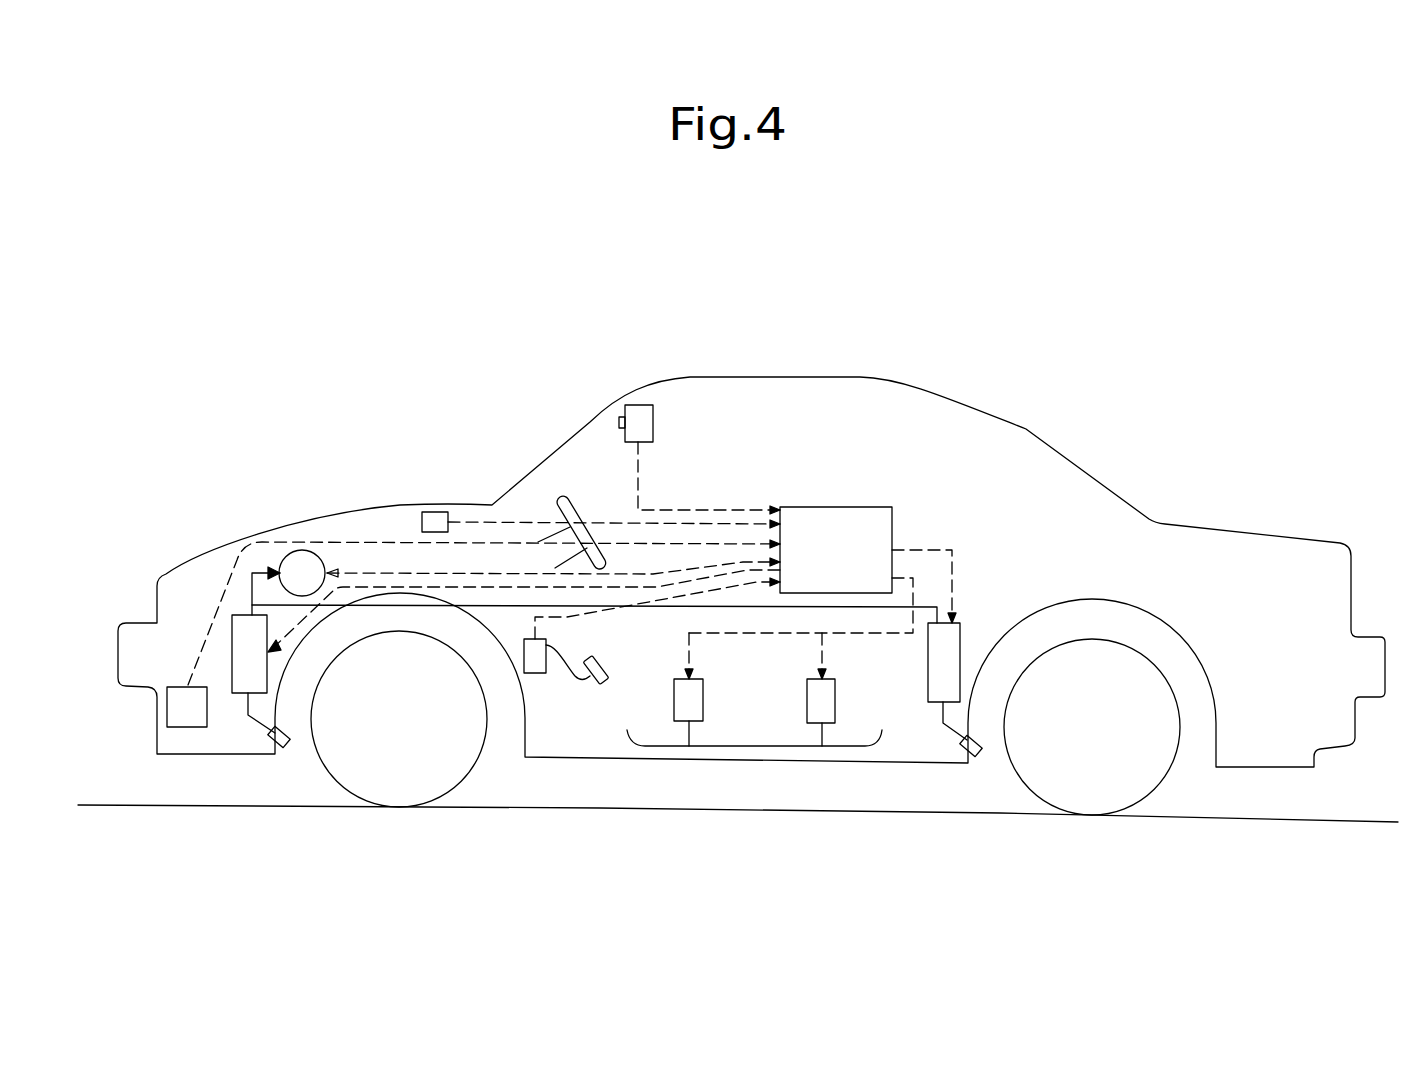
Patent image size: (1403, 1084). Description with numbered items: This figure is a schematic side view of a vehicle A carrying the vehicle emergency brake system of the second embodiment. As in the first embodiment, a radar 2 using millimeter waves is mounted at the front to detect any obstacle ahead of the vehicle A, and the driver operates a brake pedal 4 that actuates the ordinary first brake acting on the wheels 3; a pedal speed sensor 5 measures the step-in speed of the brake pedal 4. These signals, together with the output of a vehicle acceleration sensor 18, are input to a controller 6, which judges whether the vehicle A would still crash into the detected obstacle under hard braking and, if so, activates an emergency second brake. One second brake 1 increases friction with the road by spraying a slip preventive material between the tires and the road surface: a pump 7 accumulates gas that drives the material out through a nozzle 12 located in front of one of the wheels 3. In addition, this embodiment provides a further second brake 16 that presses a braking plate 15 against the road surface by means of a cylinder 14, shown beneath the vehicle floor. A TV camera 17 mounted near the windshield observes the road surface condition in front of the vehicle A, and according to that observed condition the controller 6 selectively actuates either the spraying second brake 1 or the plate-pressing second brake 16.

The vehicle A is at (1026, 429).
The second brake 1 is at (229, 639).
The radar 2 is at (177, 710).
The wheels 3 is at (450, 767).
The brake pedal 4 is at (607, 670).
The pedal speed sensor 5 is at (535, 673).
The controller 6 is at (848, 543).
The pump 7 is at (312, 550).
The nozzle 12 is at (287, 745).
The cylinder 14 is at (703, 690).
The braking plate 15 is at (665, 747).
The second brake 16 is at (817, 757).
The TV camera 17 is at (638, 407).
The vehicle acceleration sensor 18 is at (433, 513).